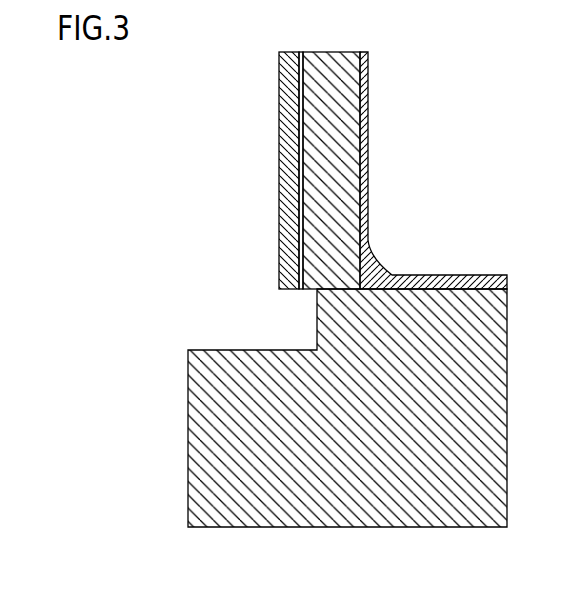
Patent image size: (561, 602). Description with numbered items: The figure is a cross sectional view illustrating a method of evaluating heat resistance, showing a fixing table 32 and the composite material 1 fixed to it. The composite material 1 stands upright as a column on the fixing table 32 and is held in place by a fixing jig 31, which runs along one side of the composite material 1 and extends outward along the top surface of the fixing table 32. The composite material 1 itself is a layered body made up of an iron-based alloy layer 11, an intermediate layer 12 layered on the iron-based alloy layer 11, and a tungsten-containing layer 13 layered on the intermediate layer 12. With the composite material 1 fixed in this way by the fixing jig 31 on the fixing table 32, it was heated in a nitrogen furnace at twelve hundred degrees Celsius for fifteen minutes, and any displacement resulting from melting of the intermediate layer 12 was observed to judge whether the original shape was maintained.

The composite material 1 is at (242, 163).
The iron-based alloy layer 11 is at (320, 77).
The intermediate layer 12 is at (298, 290).
The tungsten-containing layer 13 is at (298, 283).
The fixing jig 31 is at (368, 183).
The fixing table 32 is at (217, 518).